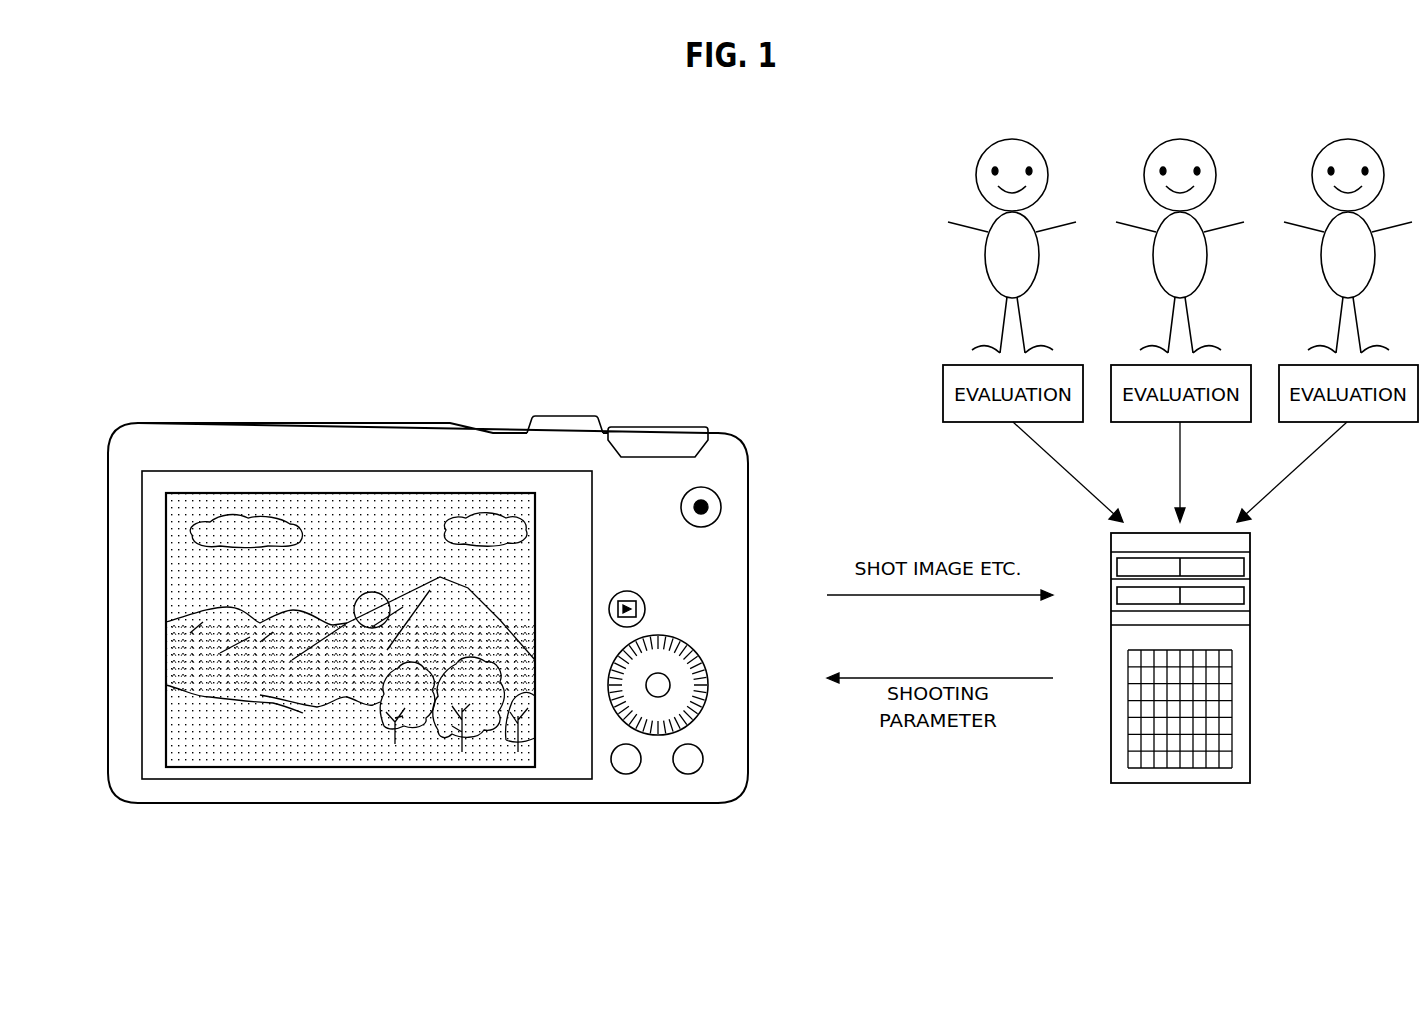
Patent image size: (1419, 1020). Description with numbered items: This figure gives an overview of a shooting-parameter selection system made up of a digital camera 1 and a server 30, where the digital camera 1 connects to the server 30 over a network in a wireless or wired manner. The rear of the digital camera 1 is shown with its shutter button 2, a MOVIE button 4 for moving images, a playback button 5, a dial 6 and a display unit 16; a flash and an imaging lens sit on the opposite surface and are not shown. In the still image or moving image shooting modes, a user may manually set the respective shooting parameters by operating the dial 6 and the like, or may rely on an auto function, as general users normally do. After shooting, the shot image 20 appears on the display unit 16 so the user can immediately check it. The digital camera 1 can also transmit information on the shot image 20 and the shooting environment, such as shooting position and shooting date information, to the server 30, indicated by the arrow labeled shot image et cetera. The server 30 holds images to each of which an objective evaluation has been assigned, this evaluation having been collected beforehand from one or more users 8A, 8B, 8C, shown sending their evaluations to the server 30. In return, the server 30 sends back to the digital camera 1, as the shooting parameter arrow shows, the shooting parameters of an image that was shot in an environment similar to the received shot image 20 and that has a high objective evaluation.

The digital camera 1 is at (294, 423).
The shutter button 2 is at (563, 416).
The MOVIE button 4 is at (721, 504).
The playback button 5 is at (645, 605).
The dial 6 is at (723, 669).
The display unit 16 is at (465, 780).
The shot image 20 is at (355, 770).
The user 8A is at (1012, 139).
The user 8B is at (1180, 139).
The user 8C is at (1348, 139).
The server 30 is at (1250, 655).